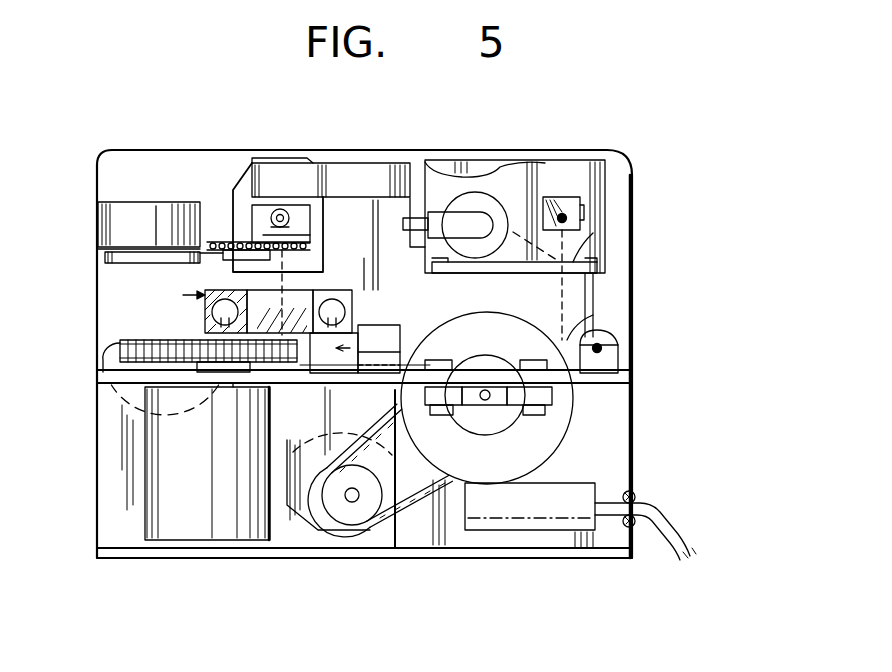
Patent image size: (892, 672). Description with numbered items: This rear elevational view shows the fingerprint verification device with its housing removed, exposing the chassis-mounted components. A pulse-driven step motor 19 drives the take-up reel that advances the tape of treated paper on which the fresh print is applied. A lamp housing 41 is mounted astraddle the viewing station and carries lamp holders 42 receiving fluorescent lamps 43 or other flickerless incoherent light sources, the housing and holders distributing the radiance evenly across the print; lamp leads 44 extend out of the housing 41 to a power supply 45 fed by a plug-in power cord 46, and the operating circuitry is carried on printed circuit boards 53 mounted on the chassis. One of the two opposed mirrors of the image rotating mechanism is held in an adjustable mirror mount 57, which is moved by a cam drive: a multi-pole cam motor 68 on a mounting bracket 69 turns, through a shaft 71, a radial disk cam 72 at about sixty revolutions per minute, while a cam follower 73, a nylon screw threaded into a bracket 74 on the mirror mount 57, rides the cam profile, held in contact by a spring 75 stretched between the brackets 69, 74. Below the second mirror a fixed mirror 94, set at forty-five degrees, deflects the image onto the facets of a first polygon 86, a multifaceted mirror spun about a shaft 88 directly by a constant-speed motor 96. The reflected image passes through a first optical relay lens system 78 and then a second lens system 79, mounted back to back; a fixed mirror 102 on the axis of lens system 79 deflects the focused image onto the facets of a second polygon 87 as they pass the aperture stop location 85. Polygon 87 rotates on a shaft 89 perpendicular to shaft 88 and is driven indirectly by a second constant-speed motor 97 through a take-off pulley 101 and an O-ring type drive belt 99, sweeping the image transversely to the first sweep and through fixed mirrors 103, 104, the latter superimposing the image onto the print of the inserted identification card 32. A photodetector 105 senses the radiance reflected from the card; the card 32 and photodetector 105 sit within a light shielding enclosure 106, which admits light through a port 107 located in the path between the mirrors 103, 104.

The pulse-driven step motor 19 is at (113, 360).
The personal identification card 32 is at (573, 262).
The lamp housing 41 is at (183, 295).
The lamp holders 42 is at (222, 318).
The fluorescent lamps 43 is at (207, 302).
The lamp leads 44 is at (350, 348).
The power supply 45 is at (600, 496).
The plug-in power cord 46 is at (673, 518).
The printed circuit boards 53 is at (113, 358).
The adjustable mirror mount 57 is at (300, 208).
The multi-pole cam motor 68 is at (123, 205).
The mounting bracket 69 is at (110, 237).
The shaft 71 is at (153, 248).
The radial disk cam 72 is at (133, 260).
The cam follower 73 is at (232, 208).
The bracket 74 is at (318, 240).
The spring 75 is at (256, 205).
The optical relay lens system 78 is at (400, 360).
The optical relay lens system 79 is at (620, 337).
The aperture stop location 85 is at (567, 340).
The polygon 86 is at (233, 387).
The polygon 87 is at (558, 410).
The shaft 88 is at (197, 387).
The shaft 89 is at (490, 400).
The fixed mirror 94 is at (297, 312).
The constant-speed motor 96 is at (207, 463).
The constant-speed motor 97 is at (323, 517).
The drive belt 99 is at (418, 490).
The take-off pulley 101 is at (367, 510).
The fixed mirror 102 is at (612, 340).
The fixed mirror 103 is at (556, 198).
The fixed mirror 104 is at (577, 195).
The photodetector 105 is at (500, 203).
The light shielding enclosure 106 is at (490, 163).
The port 107 is at (590, 213).